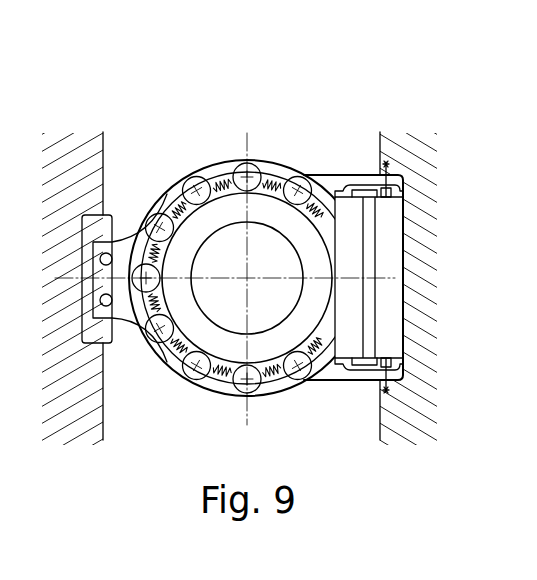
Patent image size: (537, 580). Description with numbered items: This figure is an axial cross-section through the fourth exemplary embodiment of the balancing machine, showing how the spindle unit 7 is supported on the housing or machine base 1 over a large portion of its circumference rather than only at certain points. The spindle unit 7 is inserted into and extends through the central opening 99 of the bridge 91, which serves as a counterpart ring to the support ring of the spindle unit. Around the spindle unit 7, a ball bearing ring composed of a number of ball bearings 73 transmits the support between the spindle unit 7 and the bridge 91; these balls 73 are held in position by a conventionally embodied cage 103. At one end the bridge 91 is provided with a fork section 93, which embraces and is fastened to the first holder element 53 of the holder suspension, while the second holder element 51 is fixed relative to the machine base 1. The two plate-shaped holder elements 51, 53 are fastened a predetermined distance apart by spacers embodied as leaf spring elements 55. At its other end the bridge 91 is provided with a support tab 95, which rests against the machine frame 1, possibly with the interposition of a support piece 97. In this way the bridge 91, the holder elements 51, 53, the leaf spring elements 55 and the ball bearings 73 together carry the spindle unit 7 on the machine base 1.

The machine base 1 is at (72, 168).
The spindle unit 7 is at (315, 245).
The second holder element 51 is at (388, 263).
The first holder element 53 is at (403, 218).
The leaf spring elements 55 is at (380, 185).
The ball bearings 73 is at (299, 177).
The bridge 91 is at (161, 184).
The fork section 93 is at (348, 185).
The support tab 95 is at (123, 338).
The support piece 97 is at (88, 344).
The central opening 99 is at (268, 305).
The cage 103 is at (168, 345).